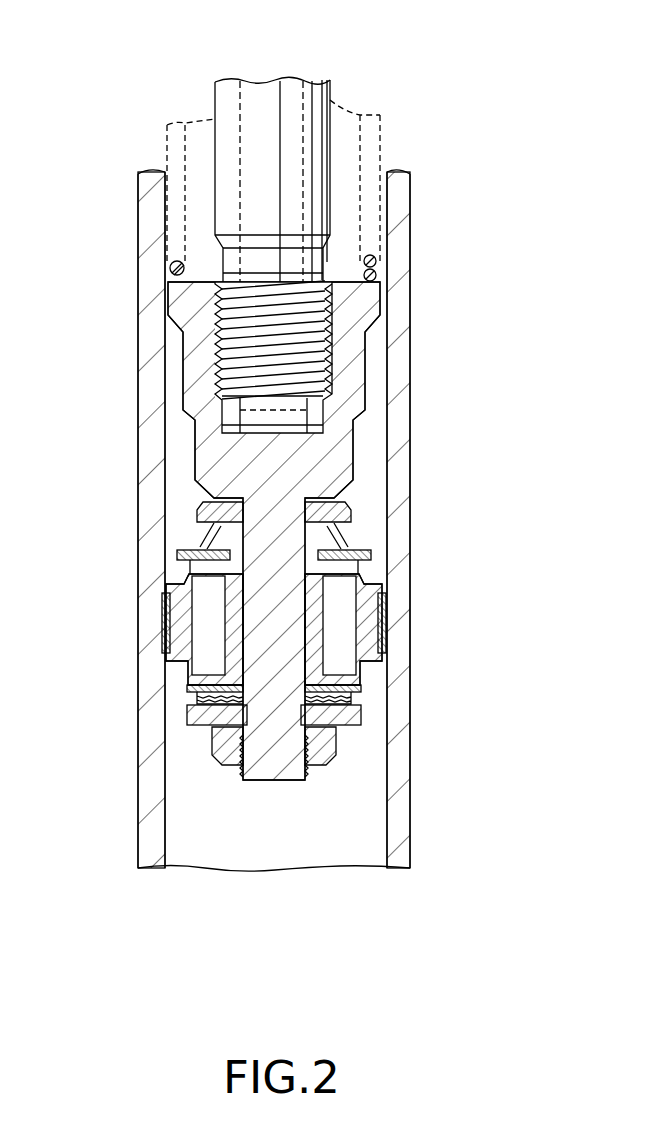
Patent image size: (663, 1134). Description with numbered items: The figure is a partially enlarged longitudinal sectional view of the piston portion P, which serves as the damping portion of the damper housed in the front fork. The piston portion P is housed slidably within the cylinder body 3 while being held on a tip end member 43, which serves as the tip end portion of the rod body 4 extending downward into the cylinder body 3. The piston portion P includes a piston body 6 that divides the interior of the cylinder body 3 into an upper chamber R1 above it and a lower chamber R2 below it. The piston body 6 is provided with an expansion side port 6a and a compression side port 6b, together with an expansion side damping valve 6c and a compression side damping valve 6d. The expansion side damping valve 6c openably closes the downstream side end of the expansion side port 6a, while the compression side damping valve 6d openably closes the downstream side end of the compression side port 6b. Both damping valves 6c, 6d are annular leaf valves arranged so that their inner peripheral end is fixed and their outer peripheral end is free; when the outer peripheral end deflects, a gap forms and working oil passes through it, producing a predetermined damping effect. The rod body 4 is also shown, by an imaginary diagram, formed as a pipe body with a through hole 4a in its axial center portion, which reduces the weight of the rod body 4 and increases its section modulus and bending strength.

The cylinder body 3 is at (150, 312).
The rod body 4 is at (330, 98).
The through hole 4a is at (263, 95).
The tip end member 43 is at (352, 375).
The piston body 6 is at (365, 628).
The expansion side port 6a is at (207, 625).
The compression side port 6b is at (345, 604).
The expansion side damping valve 6c is at (188, 688).
The compression side damping valve 6d is at (372, 551).
The piston portion P is at (196, 739).
The upper chamber R1 is at (367, 492).
The lower chamber R2 is at (302, 832).